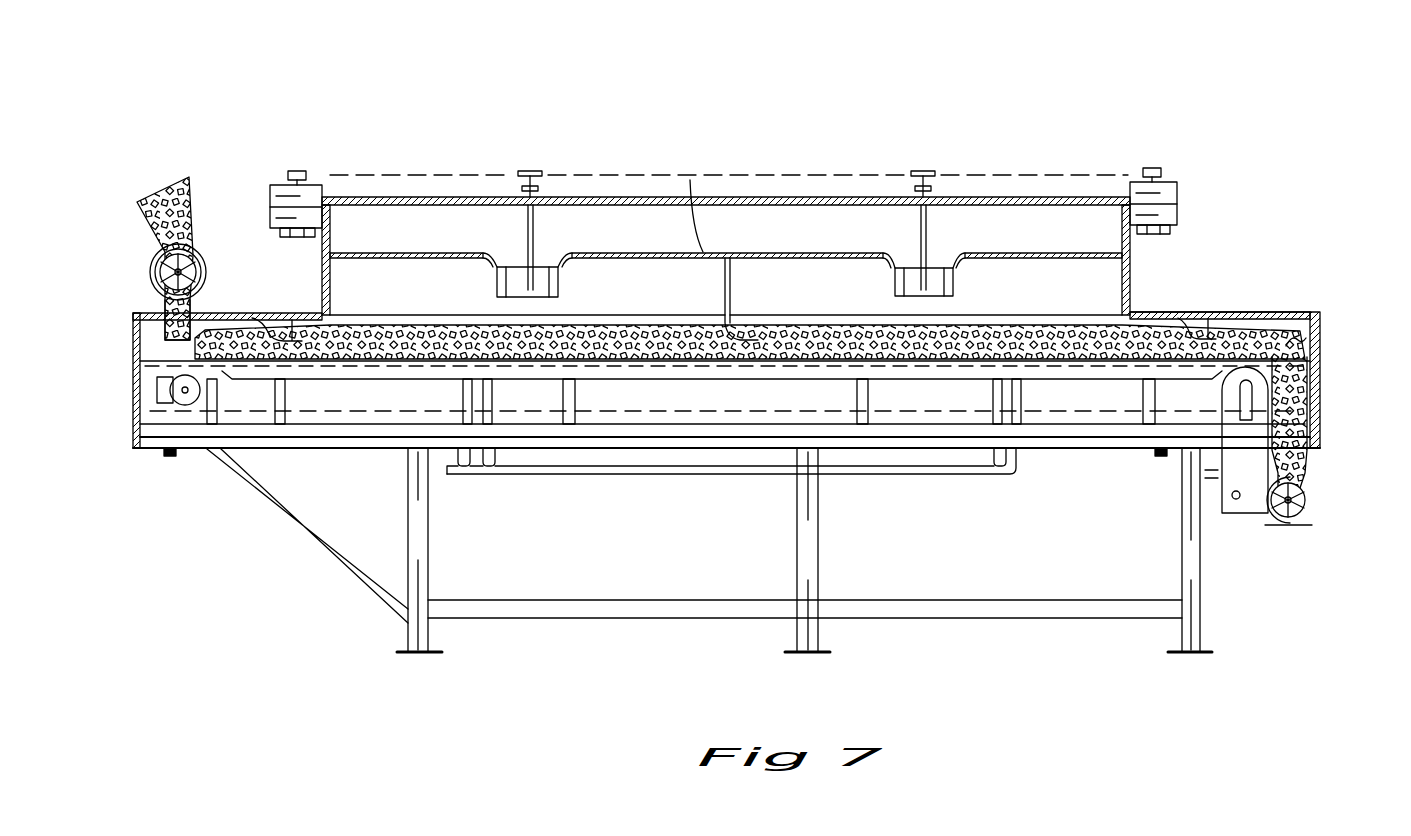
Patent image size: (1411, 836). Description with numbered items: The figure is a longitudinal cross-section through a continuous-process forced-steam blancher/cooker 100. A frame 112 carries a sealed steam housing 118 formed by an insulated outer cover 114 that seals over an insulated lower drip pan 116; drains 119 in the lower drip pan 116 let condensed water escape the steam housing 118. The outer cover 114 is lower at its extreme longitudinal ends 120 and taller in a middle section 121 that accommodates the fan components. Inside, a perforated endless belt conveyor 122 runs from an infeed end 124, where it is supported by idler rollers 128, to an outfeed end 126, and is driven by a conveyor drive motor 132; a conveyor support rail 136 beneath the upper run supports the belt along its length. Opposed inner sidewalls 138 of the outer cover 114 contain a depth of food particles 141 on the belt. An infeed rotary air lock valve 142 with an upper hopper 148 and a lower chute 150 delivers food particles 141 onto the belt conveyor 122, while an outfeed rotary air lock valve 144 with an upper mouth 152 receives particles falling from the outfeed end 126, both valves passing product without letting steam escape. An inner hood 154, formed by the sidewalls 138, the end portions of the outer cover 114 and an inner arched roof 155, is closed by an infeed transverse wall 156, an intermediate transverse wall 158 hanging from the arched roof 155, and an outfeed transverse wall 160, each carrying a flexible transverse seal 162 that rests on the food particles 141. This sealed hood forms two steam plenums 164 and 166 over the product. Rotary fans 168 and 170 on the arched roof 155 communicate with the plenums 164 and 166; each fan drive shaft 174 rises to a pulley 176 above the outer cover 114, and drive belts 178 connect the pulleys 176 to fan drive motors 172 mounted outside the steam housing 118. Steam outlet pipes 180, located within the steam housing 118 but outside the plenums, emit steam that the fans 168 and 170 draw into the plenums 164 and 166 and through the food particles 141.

The blancher/cooker 100 is at (722, 66).
The frame 112 is at (822, 552).
The outer cover 114 is at (779, 193).
The lower drip pan 116 is at (140, 429).
The steam housing 118 is at (766, 236).
The drains 119 is at (170, 459).
The extreme longitudinal ends 120 is at (150, 329).
The middle section 121 is at (316, 265).
The endless belt conveyor 122 is at (695, 384).
The infeed end 124 is at (135, 352).
The outfeed end 126 is at (1248, 309).
The idler rollers 128 is at (160, 389).
The conveyor drive motor 132 is at (1212, 495).
The conveyor support rail 136 is at (878, 373).
The inner sidewalls 138 is at (1302, 341).
The food particles 141 is at (872, 337).
The infeed rotary air lock valve 142 is at (150, 268).
The outfeed rotary air lock valve 144 is at (1308, 512).
The upper hopper 148 is at (165, 200).
The lower chute 150 is at (168, 305).
The upper mouth 152 is at (1308, 466).
The inner hood 154 is at (649, 296).
The inner arched roof 155 is at (693, 199).
The infeed transverse wall 156 is at (252, 322).
The intermediate transverse wall 158 is at (725, 285).
The outfeed transverse wall 160 is at (1178, 320).
The transverse seal 162 is at (291, 336).
The steam plenum 164 is at (405, 280).
The steam plenum 166 is at (1066, 283).
The rotary fan 168 is at (522, 278).
The rotary fan 170 is at (933, 278).
The fan drive motor 172 is at (273, 190).
The fan drive shaft 174 is at (537, 253).
The pulley 176 is at (531, 165).
The drive belt 178 is at (396, 165).
The steam outlet pipes 180 is at (478, 402).